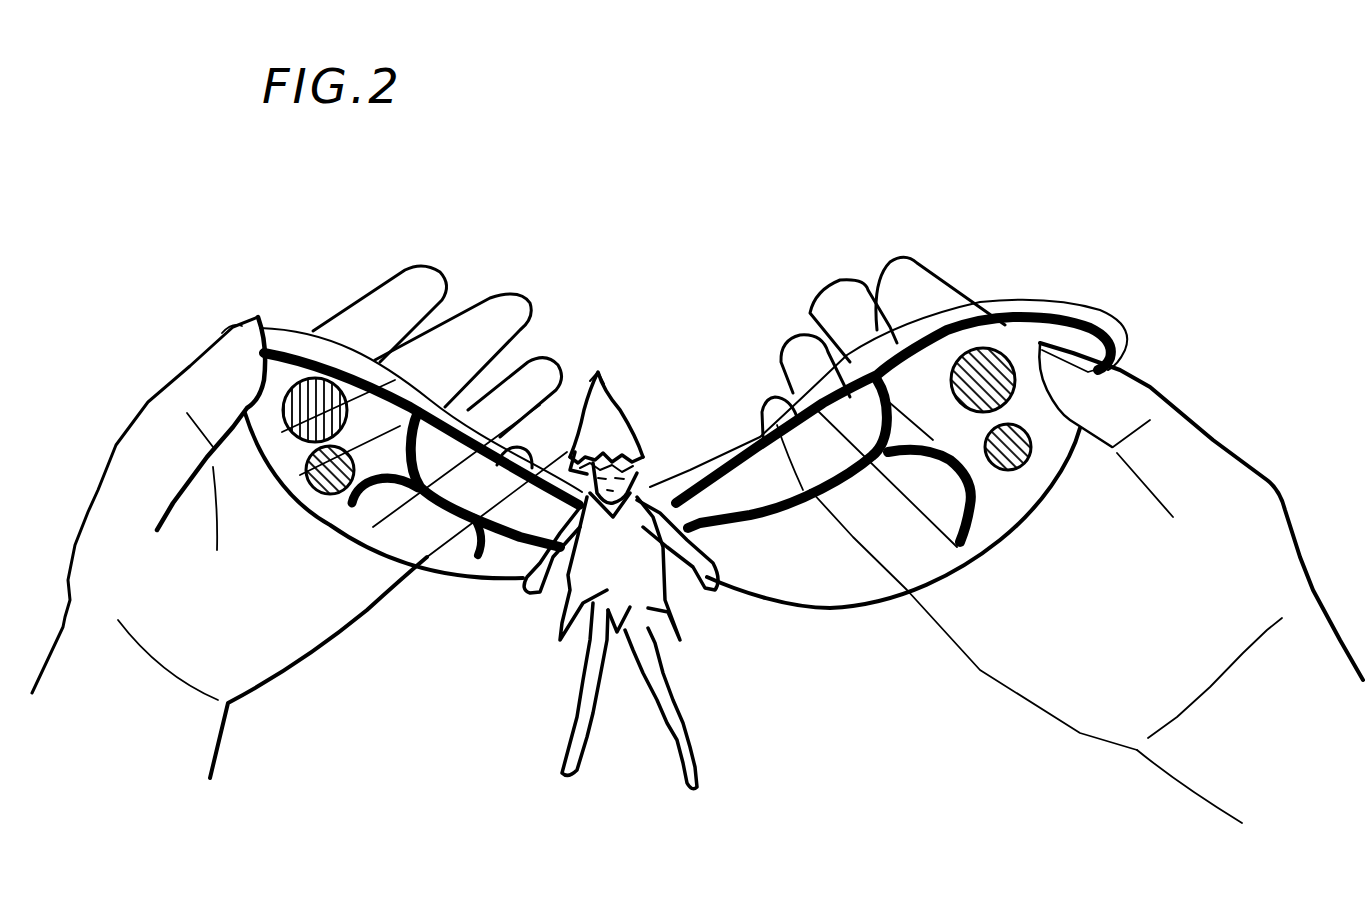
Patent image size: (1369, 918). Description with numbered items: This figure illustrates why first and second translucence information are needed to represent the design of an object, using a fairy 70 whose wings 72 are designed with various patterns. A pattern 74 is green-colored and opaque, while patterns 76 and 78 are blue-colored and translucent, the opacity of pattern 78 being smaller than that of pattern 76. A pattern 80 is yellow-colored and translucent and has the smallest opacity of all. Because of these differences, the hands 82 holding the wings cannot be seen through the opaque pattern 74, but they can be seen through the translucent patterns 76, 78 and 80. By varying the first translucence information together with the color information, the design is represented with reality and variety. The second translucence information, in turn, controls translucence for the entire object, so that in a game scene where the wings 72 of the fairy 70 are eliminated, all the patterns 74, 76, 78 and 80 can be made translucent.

The fairy 70 is at (742, 439).
The wings 72 is at (1020, 290).
The pattern 74 is at (910, 335).
The pattern 76 is at (1003, 360).
The pattern 78 is at (1031, 442).
The pattern 80 is at (880, 537).
The hands 82 is at (1218, 500).